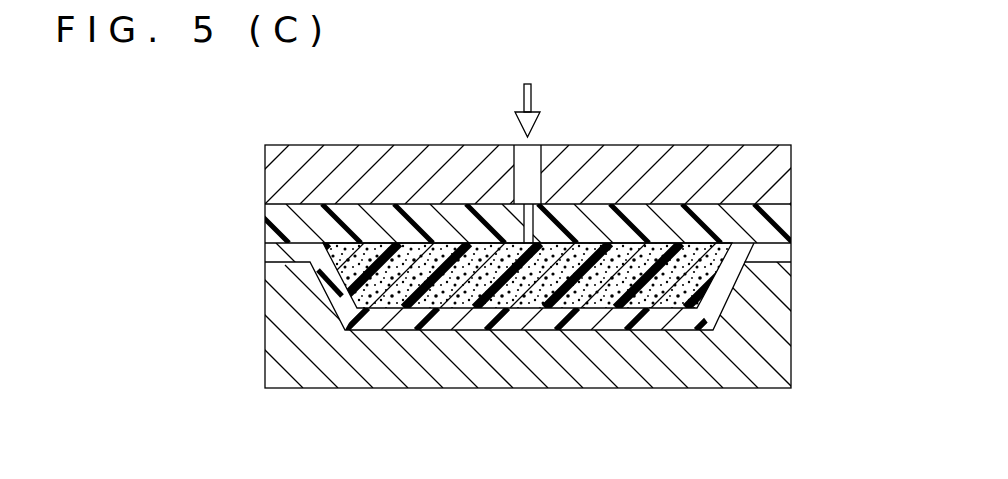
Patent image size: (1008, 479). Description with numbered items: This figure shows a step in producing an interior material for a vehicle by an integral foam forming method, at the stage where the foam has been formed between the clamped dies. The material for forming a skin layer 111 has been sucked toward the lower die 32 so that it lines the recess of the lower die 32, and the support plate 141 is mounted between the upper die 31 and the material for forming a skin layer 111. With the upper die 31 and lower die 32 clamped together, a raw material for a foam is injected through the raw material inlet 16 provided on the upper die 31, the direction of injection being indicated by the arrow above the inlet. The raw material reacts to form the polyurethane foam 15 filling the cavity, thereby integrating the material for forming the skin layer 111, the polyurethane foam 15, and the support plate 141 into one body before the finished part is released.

The upper die 31 is at (792, 172).
The raw material inlet 16 is at (541, 144).
The support plate 141 is at (792, 220).
The material for forming a skin layer 111 is at (792, 258).
The lower die 32 is at (792, 320).
The polyurethane foam 15 is at (672, 299).